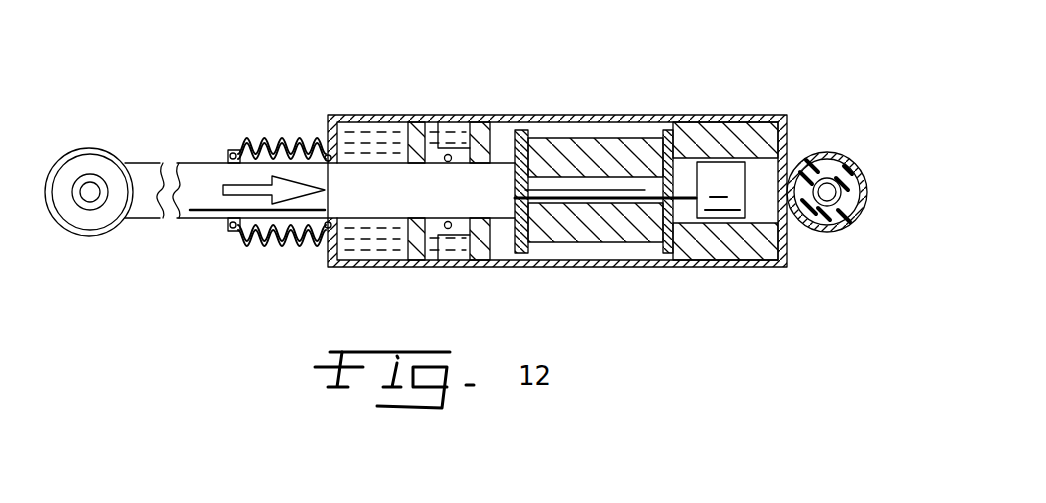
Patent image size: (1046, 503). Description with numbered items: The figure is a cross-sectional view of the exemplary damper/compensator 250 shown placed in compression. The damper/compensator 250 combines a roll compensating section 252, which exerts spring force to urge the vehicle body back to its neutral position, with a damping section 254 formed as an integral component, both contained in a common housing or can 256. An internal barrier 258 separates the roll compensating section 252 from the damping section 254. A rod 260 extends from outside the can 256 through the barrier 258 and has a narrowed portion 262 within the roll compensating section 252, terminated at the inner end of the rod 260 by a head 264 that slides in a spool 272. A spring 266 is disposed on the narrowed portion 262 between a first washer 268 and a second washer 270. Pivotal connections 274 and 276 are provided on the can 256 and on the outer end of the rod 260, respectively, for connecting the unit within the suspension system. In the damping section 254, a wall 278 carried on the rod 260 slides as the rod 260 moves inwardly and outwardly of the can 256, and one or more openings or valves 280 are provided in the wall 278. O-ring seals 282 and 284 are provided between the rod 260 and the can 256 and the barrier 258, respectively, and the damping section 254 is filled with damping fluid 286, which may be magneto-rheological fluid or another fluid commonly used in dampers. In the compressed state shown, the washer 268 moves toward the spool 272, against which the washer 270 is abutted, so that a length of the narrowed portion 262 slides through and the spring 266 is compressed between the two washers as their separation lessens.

The damper/compensator 250 is at (202, 113).
The roll compensating section 252 is at (650, 95).
The damping section 254 is at (401, 95).
The can 256 is at (728, 266).
The barrier 258 is at (480, 128).
The rod 260 is at (210, 207).
The narrowed portion 262 is at (577, 188).
The head 264 is at (723, 177).
The spring 266 is at (607, 230).
The washer 268 is at (522, 253).
The washer 270 is at (663, 254).
The spool 272 is at (752, 250).
The pivotal connection 274 is at (826, 196).
The pivotal connection 276 is at (88, 196).
The wall 278 is at (428, 238).
The valves 280 is at (408, 237).
The O-ring seal 282 is at (320, 170).
The O-ring seal 284 is at (445, 160).
The damping fluid 286 is at (353, 245).